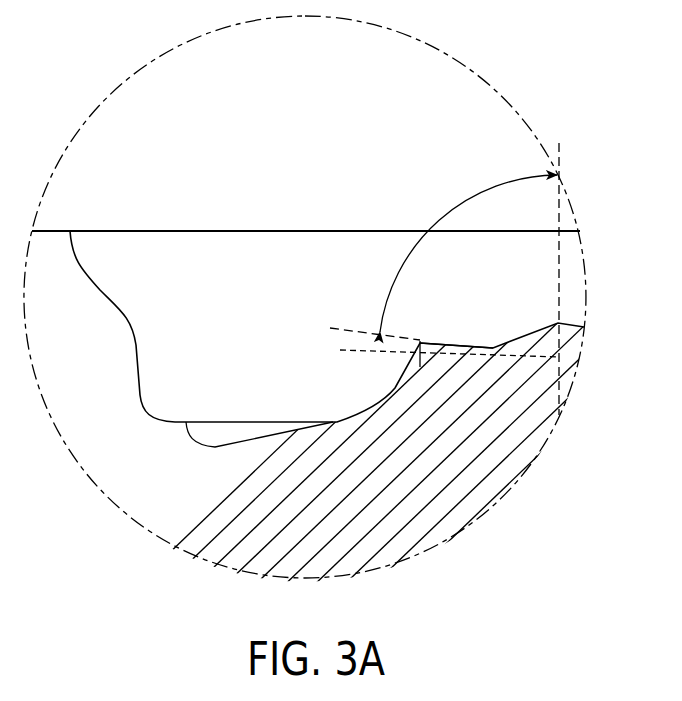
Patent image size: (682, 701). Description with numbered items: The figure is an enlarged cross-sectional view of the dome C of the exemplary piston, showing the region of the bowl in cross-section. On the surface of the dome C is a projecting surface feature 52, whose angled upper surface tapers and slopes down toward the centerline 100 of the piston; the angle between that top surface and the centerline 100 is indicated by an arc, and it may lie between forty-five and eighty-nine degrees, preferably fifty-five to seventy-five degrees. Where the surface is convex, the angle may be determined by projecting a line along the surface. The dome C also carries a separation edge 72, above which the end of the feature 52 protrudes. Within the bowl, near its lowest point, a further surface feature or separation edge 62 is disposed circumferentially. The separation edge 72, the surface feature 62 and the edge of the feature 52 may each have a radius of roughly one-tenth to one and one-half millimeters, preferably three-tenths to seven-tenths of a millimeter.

The centerline 100 is at (567, 260).
The surface feature 62 is at (228, 420).
The surface feature 52 is at (445, 342).
The separation edge 72 is at (419, 352).
The dome C is at (528, 322).